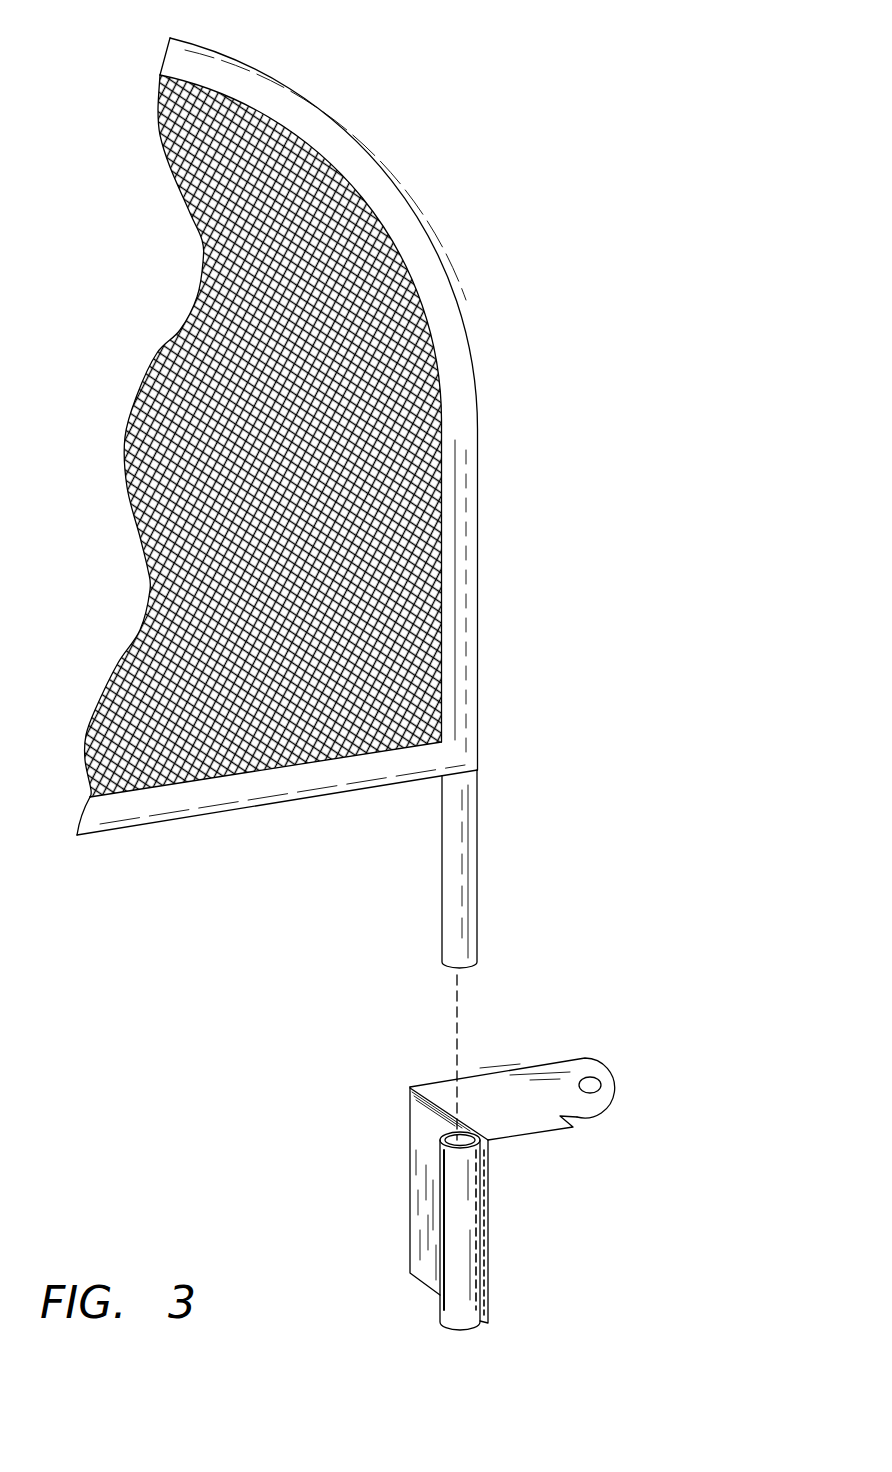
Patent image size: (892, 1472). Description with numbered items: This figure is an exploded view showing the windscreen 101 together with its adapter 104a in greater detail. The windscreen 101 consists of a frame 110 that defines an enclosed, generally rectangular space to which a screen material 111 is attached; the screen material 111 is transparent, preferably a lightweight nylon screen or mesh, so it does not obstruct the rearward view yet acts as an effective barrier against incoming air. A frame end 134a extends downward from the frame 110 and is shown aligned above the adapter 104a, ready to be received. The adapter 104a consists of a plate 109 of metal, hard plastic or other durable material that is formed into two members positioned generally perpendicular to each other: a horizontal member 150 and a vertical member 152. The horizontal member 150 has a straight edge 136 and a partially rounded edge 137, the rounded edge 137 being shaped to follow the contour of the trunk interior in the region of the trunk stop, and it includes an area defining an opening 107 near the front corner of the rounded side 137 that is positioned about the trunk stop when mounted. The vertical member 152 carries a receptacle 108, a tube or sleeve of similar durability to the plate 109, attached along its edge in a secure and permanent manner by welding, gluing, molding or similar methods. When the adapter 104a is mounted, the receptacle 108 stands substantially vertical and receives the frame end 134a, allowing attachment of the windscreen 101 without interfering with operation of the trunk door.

The windscreen 101 is at (342, 22).
The frame 110 is at (378, 160).
The screen material 111 is at (276, 141).
The frame end 134a is at (478, 838).
The horizontal member 150 is at (601, 1020).
The straight edge 136 is at (509, 1050).
The opening 107 is at (598, 1080).
The rounded edge 137 is at (613, 1124).
The plate 109 is at (420, 1068).
The adapter 104a is at (360, 1136).
The vertical member 152 is at (390, 1232).
The receptacle 108 is at (463, 1280).